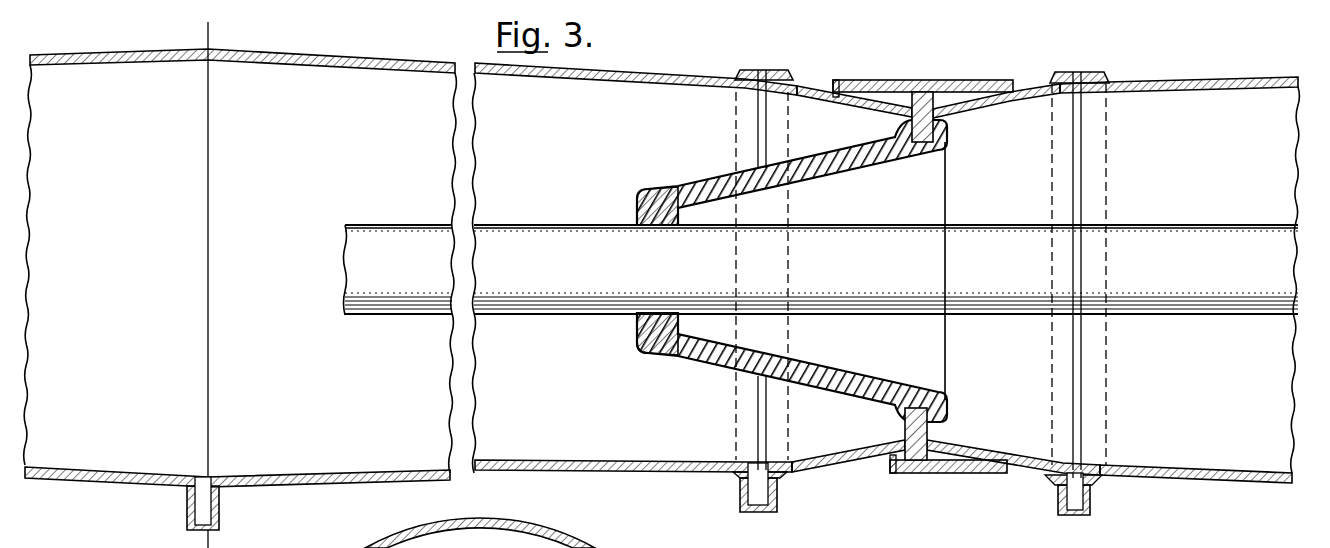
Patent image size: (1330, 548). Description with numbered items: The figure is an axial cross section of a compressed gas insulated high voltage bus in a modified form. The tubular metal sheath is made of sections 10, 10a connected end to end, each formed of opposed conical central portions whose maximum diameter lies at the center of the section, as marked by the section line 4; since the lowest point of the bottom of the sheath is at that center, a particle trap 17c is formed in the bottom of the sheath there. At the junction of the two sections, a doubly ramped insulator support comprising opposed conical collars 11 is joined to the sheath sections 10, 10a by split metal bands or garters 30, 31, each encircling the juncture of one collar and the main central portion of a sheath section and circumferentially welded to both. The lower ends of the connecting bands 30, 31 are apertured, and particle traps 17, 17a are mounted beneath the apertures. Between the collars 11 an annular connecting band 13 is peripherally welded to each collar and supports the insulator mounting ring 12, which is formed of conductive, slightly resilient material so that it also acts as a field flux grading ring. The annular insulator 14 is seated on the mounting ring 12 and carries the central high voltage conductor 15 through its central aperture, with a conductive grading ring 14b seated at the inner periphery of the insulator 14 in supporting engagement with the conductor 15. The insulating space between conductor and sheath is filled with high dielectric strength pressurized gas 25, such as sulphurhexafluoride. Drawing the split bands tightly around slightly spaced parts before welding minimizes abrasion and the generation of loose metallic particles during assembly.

The section line 4 is at (209, 32).
The pressurized gas 25 is at (396, 86).
The particle trap 17c is at (185, 506).
The sheath section 10 is at (638, 70).
The conical collar 11 is at (848, 99).
The sheath section 10a is at (1195, 82).
The central high voltage conductor 15 is at (566, 236).
The split metal band 30 is at (758, 69).
The split metal band 31 is at (1079, 71).
The annular insulator 14 is at (716, 182).
The conductive grading ring 14b is at (657, 226).
The annular connecting band 13 is at (870, 80).
The insulator mounting ring 12 is at (921, 93).
The particle trap 17 is at (742, 502).
The particle trap 17a is at (1096, 496).